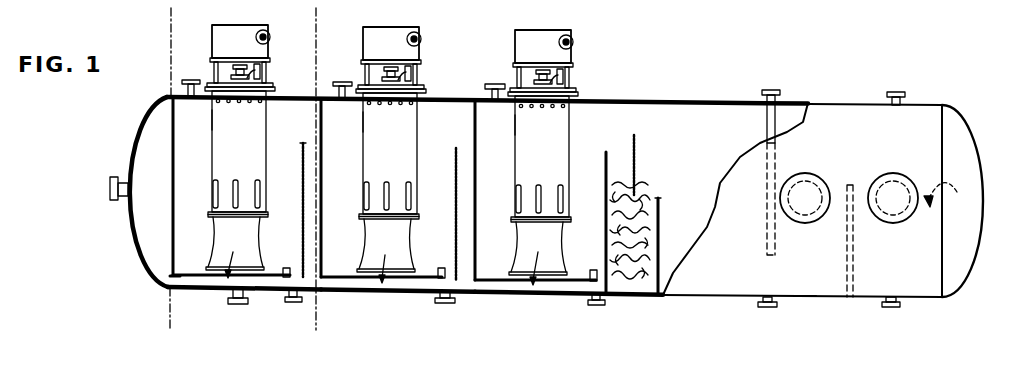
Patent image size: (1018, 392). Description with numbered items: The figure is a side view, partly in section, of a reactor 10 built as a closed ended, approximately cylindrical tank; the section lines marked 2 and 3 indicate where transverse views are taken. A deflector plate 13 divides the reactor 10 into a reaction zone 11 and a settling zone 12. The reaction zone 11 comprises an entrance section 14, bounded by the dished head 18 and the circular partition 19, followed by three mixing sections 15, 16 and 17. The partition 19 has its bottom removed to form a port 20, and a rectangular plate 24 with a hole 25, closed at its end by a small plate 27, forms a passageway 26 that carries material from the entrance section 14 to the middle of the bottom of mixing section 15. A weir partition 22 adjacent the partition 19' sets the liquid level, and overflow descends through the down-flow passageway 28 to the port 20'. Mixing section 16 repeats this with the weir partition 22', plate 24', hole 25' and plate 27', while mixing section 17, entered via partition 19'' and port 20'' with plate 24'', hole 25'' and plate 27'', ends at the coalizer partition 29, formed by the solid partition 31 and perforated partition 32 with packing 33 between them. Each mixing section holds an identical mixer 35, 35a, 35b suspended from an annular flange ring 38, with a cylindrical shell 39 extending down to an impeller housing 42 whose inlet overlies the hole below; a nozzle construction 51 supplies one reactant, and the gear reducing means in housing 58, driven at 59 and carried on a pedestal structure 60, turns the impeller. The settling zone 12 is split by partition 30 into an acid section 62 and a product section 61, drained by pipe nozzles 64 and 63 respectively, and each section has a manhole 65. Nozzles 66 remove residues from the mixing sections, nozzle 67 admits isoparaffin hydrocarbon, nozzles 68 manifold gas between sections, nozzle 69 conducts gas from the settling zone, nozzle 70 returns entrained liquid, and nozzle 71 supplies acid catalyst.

The section line 2- 2 is at (195, 13).
The section line 3- 3 is at (300, 12).
The reactor 10 is at (972, 124).
The reaction zone 11 is at (590, 113).
The settling zone 12 is at (709, 140).
The deflector plate 13 is at (638, 160).
The entrance section 14 is at (139, 194).
The mixing section 15 is at (282, 124).
The mixing section 16 is at (433, 129).
The mixing section 17 is at (583, 133).
The dished head 18 is at (132, 237).
The circular partition 19 is at (188, 186).
The partition 19' is at (341, 188).
The partition 19'' is at (495, 190).
The port 20 is at (223, 288).
The port 20' is at (398, 299).
The port 20'' is at (569, 305).
The weir partition 22 is at (287, 210).
The weir partition 22' is at (439, 214).
The rectangular plate 24 is at (231, 259).
The rectangular plate 24' is at (381, 265).
The rectangular plate 24'' is at (535, 264).
The hole 25 is at (233, 255).
The hole 25' is at (384, 258).
The hole 25'' is at (538, 258).
The passageway 26 is at (192, 286).
The small plate 27 is at (285, 259).
The small plate 27' is at (435, 259).
The small plate 27'' is at (590, 259).
The down-flow passageway 28 is at (300, 143).
The coalizer partition 29 is at (667, 191).
The settling zone partition 30 is at (855, 257).
The partition 31 is at (604, 212).
The perforated partition 32 is at (660, 217).
The packing 33 is at (620, 170).
The mixer 35 is at (208, 122).
The mixer 35a is at (358, 119).
The mixer 35b is at (510, 119).
The annular flange ring 38 is at (275, 88).
The cylindrical shell 39 is at (229, 164).
The impeller housing 42 is at (259, 231).
The nozzle construction 51 is at (259, 72).
The housing 58 is at (237, 26).
The connection to gear reducing means 59 is at (271, 38).
The pedestal structure 60 is at (214, 62).
The product section 61 is at (949, 198).
The acid section 62 is at (810, 278).
The pipe nozzle 63 is at (899, 306).
The pipe nozzle 64 is at (774, 306).
The manhole 65 is at (879, 181).
The nozzle 66 is at (289, 303).
The nozzle 67 is at (123, 177).
The nozzle 68 is at (184, 88).
The nozzle 69 is at (905, 100).
The nozzle 70 is at (779, 99).
The nozzle 71 is at (246, 293).